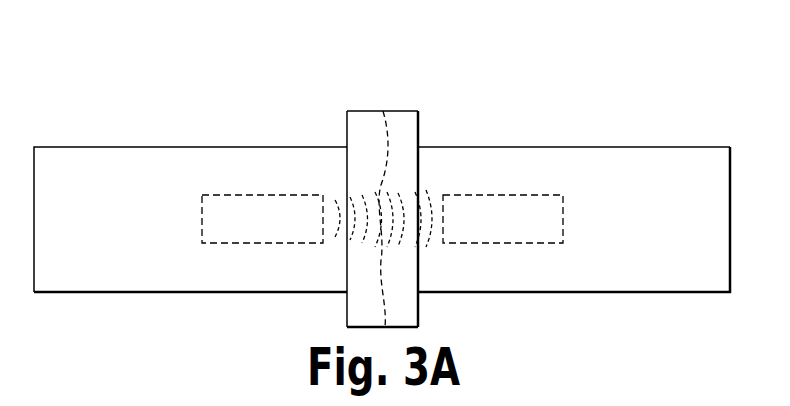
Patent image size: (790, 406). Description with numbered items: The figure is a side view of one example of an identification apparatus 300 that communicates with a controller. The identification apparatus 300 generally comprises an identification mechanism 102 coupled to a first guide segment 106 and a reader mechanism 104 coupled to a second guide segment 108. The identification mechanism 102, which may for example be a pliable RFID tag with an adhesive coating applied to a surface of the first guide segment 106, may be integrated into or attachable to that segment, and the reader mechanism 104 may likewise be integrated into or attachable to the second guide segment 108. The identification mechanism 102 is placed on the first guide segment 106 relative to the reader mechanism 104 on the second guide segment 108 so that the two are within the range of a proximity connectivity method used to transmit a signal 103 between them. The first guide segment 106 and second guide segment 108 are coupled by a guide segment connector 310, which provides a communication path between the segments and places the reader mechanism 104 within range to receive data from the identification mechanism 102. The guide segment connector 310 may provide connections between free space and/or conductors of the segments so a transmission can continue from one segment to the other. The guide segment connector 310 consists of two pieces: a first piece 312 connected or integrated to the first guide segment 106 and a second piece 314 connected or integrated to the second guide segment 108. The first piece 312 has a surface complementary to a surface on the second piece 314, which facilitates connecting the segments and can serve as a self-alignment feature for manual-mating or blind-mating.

The identification apparatus 300 is at (115, 96).
The identification mechanism 102 is at (201, 221).
The signal 103 is at (433, 209).
The reader mechanism 104 is at (565, 217).
The first guide segment 106 is at (192, 147).
The second guide segment 108 is at (575, 148).
The guide segment connector 310 is at (380, 96).
The first piece 312 is at (357, 111).
The second piece 314 is at (406, 111).